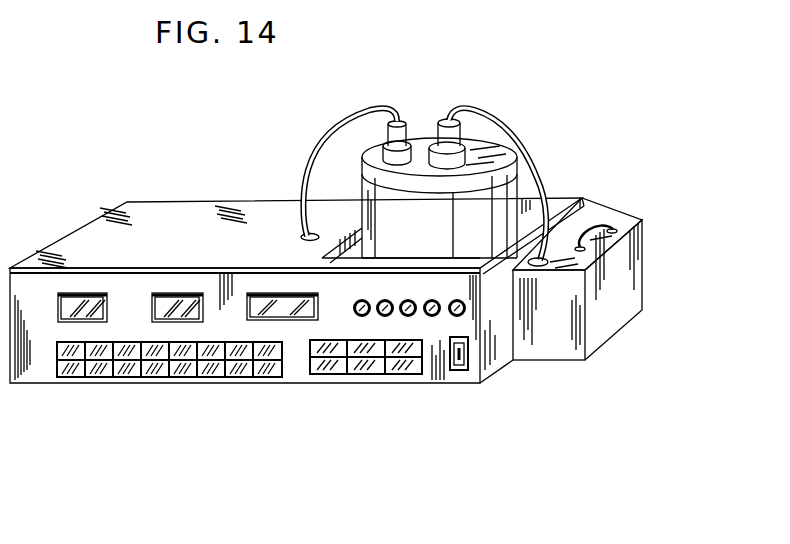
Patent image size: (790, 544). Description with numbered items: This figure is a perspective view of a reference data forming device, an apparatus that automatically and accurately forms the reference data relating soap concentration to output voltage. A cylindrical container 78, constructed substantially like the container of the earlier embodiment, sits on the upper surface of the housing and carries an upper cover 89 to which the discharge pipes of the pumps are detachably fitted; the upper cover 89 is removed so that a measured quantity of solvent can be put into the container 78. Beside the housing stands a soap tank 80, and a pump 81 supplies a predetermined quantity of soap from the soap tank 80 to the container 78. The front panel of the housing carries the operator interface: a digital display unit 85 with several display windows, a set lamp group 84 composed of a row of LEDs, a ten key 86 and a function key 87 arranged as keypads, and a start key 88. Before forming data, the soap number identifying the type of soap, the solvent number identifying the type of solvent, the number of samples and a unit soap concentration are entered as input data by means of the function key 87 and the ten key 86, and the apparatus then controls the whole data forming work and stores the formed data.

The container 78 is at (500, 207).
The soap tank 80 is at (628, 305).
The pump 81 is at (552, 347).
The set lamp group 84 is at (433, 318).
The digital display unit 85 is at (256, 281).
The ten key 86 is at (248, 357).
The function key 87 is at (358, 362).
The start key 88 is at (458, 371).
The upper cover 89 is at (418, 137).